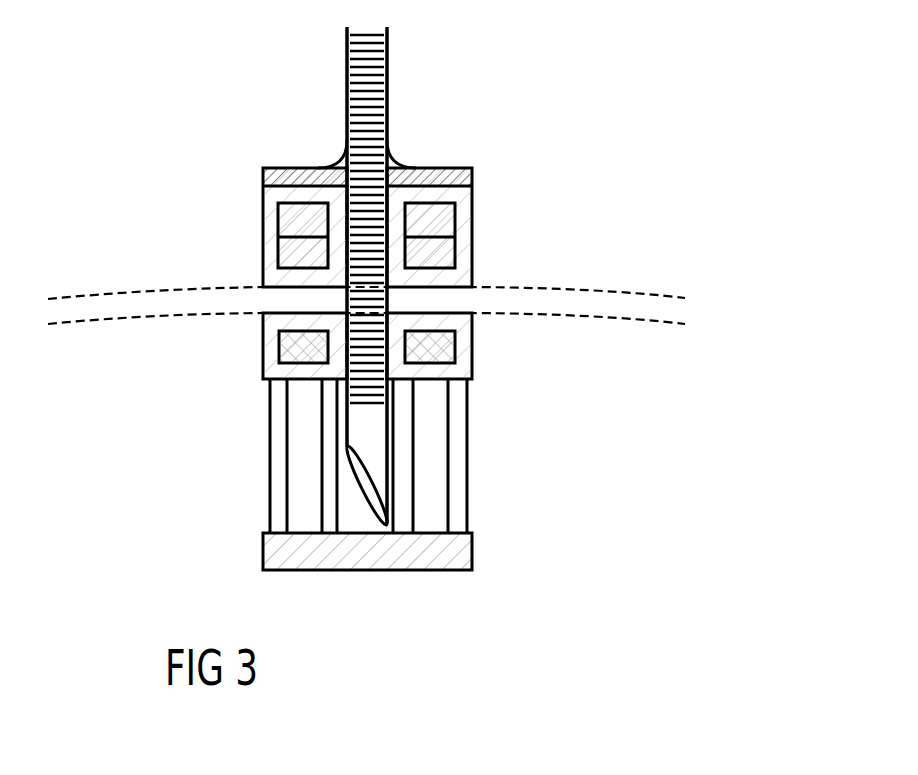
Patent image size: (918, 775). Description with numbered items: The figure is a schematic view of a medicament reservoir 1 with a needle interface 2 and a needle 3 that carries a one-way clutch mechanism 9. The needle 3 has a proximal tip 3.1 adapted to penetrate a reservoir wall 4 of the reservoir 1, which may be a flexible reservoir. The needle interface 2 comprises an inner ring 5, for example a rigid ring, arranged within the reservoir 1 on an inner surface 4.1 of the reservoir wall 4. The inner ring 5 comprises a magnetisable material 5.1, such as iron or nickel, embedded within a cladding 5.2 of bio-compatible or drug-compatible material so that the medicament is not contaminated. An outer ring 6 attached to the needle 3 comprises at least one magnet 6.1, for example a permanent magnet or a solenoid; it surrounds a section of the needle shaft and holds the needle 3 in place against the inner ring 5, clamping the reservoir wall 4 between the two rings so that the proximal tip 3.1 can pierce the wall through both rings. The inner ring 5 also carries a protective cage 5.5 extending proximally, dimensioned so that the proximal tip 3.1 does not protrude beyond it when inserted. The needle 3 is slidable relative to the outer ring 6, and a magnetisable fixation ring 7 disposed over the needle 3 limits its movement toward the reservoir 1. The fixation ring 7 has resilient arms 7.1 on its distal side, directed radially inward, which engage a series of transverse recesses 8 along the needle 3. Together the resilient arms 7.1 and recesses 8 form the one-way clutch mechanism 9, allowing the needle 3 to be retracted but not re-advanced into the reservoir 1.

The medicament reservoir 1 is at (692, 522).
The needle interface 2 is at (480, 284).
The needle 3 is at (346, 49).
The proximal tip 3.1 is at (389, 478).
The reservoir wall 4 is at (108, 302).
The inner surface 4.1 is at (630, 322).
The inner ring 5 is at (472, 372).
The magnetisable material 5.1 is at (302, 354).
The cladding 5.2 is at (270, 345).
The protective cage 5.5 is at (275, 492).
The outer ring 6 is at (472, 210).
The magnet 6.1 is at (447, 222).
The fixation ring 7 is at (270, 178).
The resilient arms 7.1 is at (400, 160).
The recesses 8 is at (346, 98).
The one-way clutch mechanism 9 is at (391, 137).